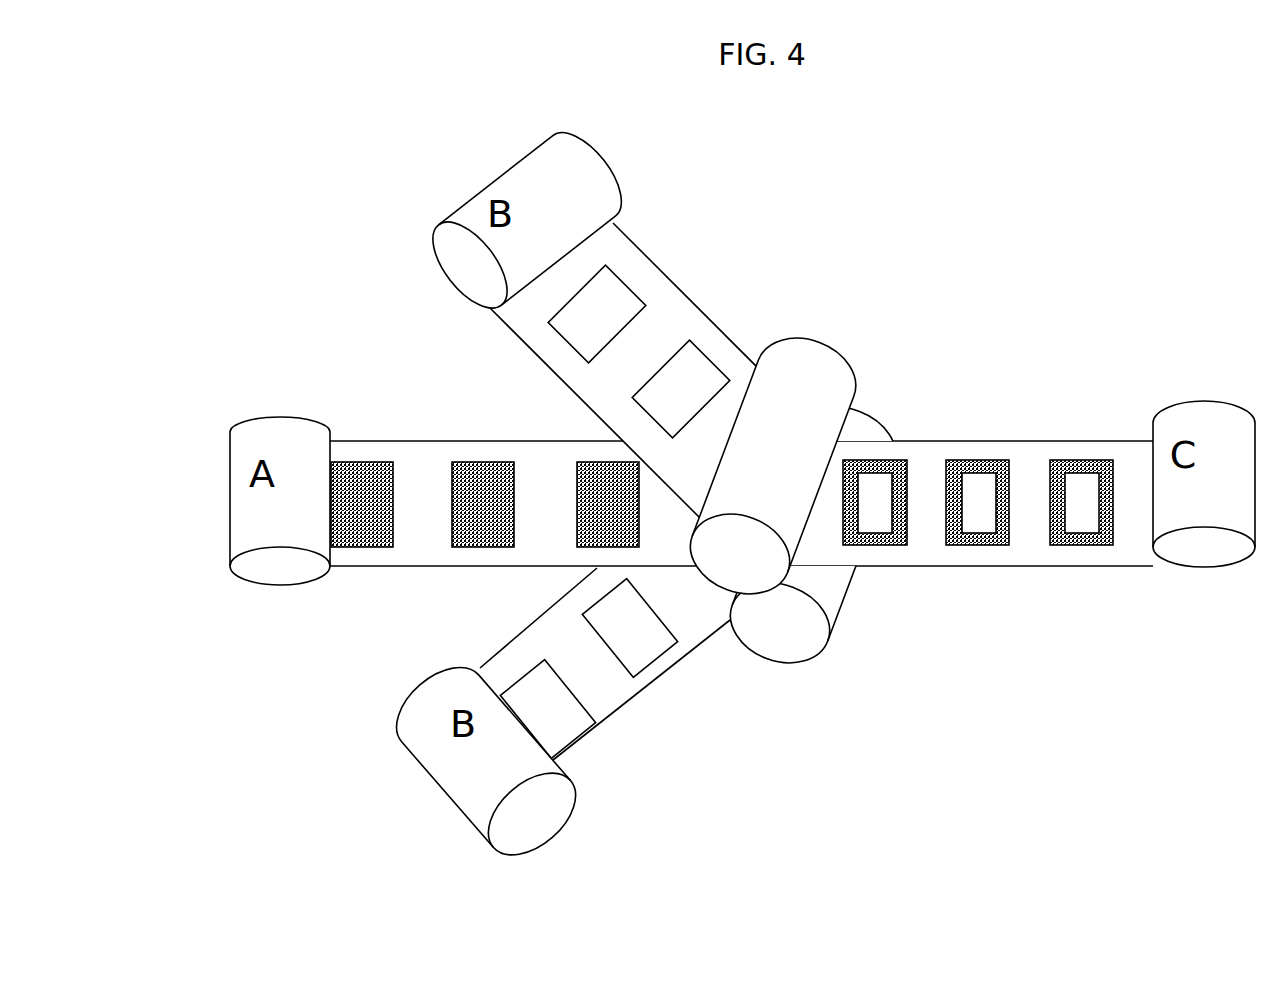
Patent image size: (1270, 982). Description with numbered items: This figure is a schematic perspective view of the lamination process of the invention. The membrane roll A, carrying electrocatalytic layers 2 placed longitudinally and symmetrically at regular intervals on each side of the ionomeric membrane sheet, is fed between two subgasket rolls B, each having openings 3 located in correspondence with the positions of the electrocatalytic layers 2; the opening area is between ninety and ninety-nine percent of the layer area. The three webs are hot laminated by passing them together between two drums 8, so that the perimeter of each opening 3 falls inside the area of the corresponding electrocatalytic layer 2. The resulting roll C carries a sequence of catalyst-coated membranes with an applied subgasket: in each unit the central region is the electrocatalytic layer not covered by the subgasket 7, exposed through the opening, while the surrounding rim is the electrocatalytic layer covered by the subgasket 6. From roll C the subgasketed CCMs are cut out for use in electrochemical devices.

The electrocatalytic layer 2 is at (577, 505).
The opening 3 is at (620, 297).
The electrocatalytic layer covered by the subgasket 6 is at (870, 540).
The electrocatalytic layer not covered by the subgasket 7 is at (865, 505).
The drum 8 is at (783, 380).